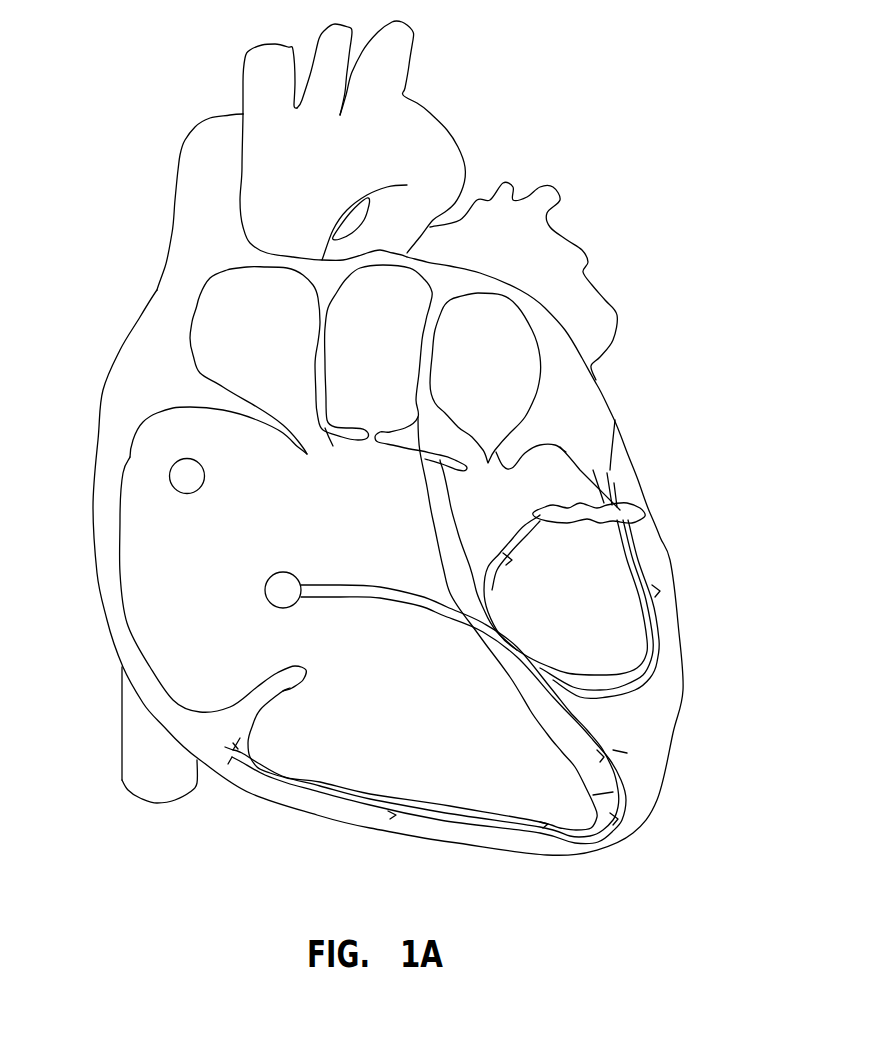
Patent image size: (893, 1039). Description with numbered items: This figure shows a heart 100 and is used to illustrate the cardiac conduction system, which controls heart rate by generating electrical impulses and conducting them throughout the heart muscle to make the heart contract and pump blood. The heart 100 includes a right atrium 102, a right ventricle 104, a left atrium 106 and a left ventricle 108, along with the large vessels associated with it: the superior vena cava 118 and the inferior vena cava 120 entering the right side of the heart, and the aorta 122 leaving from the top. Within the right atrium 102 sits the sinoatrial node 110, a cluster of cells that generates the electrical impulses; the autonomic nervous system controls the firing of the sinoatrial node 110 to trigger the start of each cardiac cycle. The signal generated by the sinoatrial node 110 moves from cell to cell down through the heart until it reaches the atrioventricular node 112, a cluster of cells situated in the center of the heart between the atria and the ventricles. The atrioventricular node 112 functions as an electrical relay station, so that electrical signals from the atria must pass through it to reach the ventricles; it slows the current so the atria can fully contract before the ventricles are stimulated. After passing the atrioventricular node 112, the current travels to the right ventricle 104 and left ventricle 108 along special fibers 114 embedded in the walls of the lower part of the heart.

The heart 100 is at (629, 65).
The right atrium 102 is at (187, 543).
The right ventricle 104 is at (365, 757).
The left atrium 106 is at (507, 376).
The left ventricle 108 is at (607, 617).
The sinoatrial (SA) node 110 is at (187, 474).
The atrioventricular (AV) node 112 is at (273, 593).
The special fibers 114 is at (523, 663).
The superior vena cava 118 is at (207, 174).
The inferior vena cava 120 is at (143, 753).
The aorta 122 is at (365, 133).